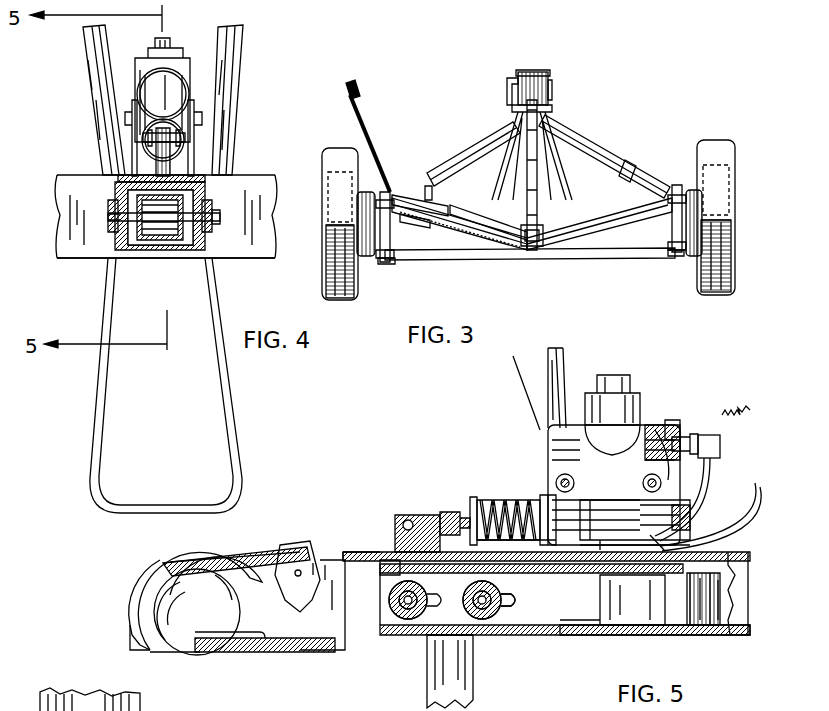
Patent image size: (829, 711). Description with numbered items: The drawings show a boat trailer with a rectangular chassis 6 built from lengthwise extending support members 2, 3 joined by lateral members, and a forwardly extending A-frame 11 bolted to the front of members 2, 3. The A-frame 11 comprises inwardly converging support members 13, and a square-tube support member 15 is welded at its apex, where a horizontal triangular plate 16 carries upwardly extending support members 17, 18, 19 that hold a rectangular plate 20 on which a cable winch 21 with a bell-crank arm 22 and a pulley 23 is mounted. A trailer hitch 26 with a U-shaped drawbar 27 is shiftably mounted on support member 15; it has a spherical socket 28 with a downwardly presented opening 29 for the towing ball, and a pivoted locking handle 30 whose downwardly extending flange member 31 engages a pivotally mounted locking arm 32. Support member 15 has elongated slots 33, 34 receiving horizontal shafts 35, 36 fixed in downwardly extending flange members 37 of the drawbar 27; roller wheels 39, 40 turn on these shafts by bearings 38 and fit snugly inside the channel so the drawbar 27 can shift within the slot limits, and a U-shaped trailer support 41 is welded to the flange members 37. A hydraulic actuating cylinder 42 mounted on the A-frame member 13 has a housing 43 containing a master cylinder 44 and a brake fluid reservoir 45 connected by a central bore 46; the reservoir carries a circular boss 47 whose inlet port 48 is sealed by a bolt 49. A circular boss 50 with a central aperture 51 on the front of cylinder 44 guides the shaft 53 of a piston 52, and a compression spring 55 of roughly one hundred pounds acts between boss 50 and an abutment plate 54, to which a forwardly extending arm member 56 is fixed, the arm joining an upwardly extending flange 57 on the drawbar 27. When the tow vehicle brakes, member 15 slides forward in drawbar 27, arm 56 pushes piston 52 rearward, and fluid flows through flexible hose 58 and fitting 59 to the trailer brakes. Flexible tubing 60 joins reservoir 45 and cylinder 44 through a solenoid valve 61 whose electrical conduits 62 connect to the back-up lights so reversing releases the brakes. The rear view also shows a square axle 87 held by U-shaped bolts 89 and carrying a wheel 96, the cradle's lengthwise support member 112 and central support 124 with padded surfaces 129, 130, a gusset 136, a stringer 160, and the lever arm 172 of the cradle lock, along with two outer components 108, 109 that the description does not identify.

In FIG. 3, the lengthwise extending support member 2 is at (388, 192).
In FIG. 3, the lengthwise extending support member 3 is at (676, 185).
In FIG. 3, the rectangular chassis 6 is at (478, 235).
In FIG. 4, the A-frame 11 is at (265, 252).
In FIG. 3, the forwardly extending inwardly converging support member 13 is at (470, 210).
In FIG. 4, the forwardly extending support member 15 is at (178, 242).
In FIG. 5, the forwardly extending support member 15 is at (612, 630).
In FIG. 4, the horizontal triangular plate 16 is at (258, 175).
In FIG. 3, the upwardly extending support member 17 is at (500, 172).
In FIG. 4, the upwardly extending support member 18 is at (232, 70).
In FIG. 3, the upwardly extending support member 18 is at (508, 142).
In FIG. 4, the upwardly extending support member 19 is at (95, 85).
In FIG. 3, the upwardly extending support member 19 is at (560, 132).
In FIG. 3, the horizontal rectangularly shaped plate 20 is at (548, 108).
In FIG. 3, the cable winch 21 is at (553, 85).
In FIG. 3, the bell-crank arm 22 is at (510, 98).
In FIG. 3, the pulley 23 is at (545, 70).
In FIG. 5, the trailer hitch 26 is at (138, 612).
In FIG. 5, the drawbar 27 is at (360, 620).
In FIG. 5, the spherical socket 28 is at (145, 598).
In FIG. 5, the downwardly presented opening 29 is at (178, 640).
In FIG. 5, the lock release and locking handle 30 is at (215, 550).
In FIG. 5, the downwardly extending flange member 31 is at (305, 595).
In FIG. 5, the locking arm 32 is at (238, 653).
In FIG. 5, the elongated slot 33 is at (435, 650).
In FIG. 5, the elongated slot 34 is at (525, 630).
In FIG. 5, the horizontally extending shaft 35 is at (398, 615).
In FIG. 5, the horizontally extending shaft 36 is at (482, 620).
In FIG. 4, the downwardly extending flange member 37 is at (116, 242).
In FIG. 5, the bearing 38 is at (415, 618).
In FIG. 4, the roller wheel 39 is at (152, 248).
In FIG. 5, the roller wheel 39 is at (380, 560).
In FIG. 5, the roller wheel 40 is at (515, 600).
In FIG. 4, the trailer support 41 is at (103, 415).
In FIG. 5, the trailer support 41 is at (490, 640).
In FIG. 4, the hydraulic actuating cylinder 42 is at (175, 56).
In FIG. 5, the hydraulic actuating cylinder 42 is at (684, 416).
In FIG. 5, the housing 43 is at (565, 456).
In FIG. 5, the master cylinder 44 is at (617, 548).
In FIG. 5, the brake fluid reservoir 45 is at (690, 432).
In FIG. 5, the central bore 46 is at (660, 425).
In FIG. 5, the circular boss 47 is at (640, 460).
In FIG. 5, the inlet port 48 is at (590, 400).
In FIG. 5, the bolt 49 is at (618, 375).
In FIG. 5, the circular boss 50 is at (545, 500).
In FIG. 5, the central aperture 51 is at (535, 548).
In FIG. 5, the piston 52 is at (608, 552).
In FIG. 5, the outwardly extending shaft 53 is at (505, 495).
In FIG. 5, the abutment plate 54 is at (470, 497).
In FIG. 5, the compression spring 55 is at (485, 500).
In FIG. 5, the forwardly extending arm member 56 is at (442, 515).
In FIG. 5, the upwardly extending flange 57 is at (397, 515).
In FIG. 5, the flexible hose 58 is at (755, 483).
In FIG. 5, the fitting 59 is at (700, 495).
In FIG. 5, the flexible tubing 60 is at (690, 542).
In FIG. 5, the solenoid valve 61 is at (720, 445).
In FIG. 5, the electrical conduits 62 is at (743, 401).
In FIG. 3, the square-shaped axle 87 is at (610, 248).
In FIG. 3, the U-shaped bolt 89 is at (670, 256).
In FIG. 3, the motor vehicle wheel 96 is at (736, 268).
In FIG. 3, the left wheel 108 is at (337, 148).
In FIG. 3, the right wheel 109 is at (718, 148).
In FIG. 5, the lengthwise extending support member 112 is at (305, 690).
In FIG. 3, the central support 124 is at (530, 248).
In FIG. 3, the padded surface 129 is at (628, 160).
In FIG. 3, the padded surface 130 is at (448, 152).
In FIG. 3, the gusset 136 is at (400, 235).
In FIG. 3, the boat-supporting stringer 160 is at (424, 186).
In FIG. 3, the lever arm 172 is at (366, 140).